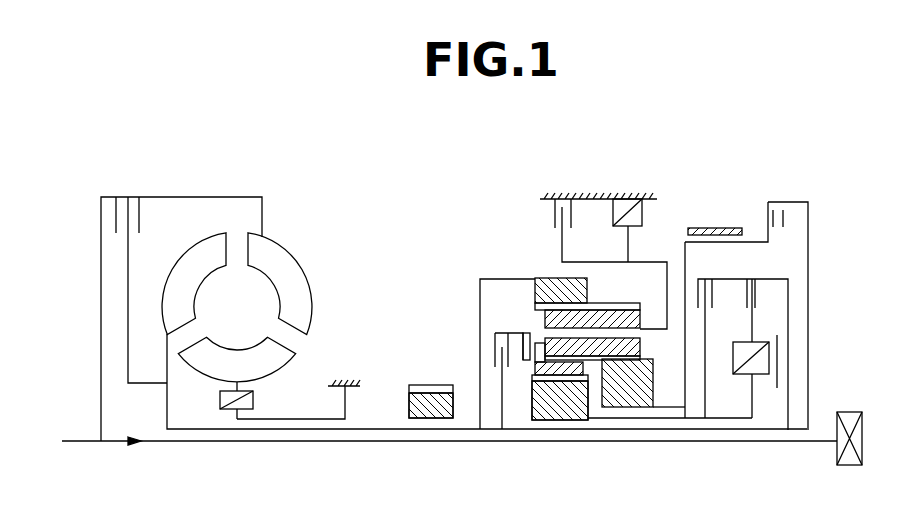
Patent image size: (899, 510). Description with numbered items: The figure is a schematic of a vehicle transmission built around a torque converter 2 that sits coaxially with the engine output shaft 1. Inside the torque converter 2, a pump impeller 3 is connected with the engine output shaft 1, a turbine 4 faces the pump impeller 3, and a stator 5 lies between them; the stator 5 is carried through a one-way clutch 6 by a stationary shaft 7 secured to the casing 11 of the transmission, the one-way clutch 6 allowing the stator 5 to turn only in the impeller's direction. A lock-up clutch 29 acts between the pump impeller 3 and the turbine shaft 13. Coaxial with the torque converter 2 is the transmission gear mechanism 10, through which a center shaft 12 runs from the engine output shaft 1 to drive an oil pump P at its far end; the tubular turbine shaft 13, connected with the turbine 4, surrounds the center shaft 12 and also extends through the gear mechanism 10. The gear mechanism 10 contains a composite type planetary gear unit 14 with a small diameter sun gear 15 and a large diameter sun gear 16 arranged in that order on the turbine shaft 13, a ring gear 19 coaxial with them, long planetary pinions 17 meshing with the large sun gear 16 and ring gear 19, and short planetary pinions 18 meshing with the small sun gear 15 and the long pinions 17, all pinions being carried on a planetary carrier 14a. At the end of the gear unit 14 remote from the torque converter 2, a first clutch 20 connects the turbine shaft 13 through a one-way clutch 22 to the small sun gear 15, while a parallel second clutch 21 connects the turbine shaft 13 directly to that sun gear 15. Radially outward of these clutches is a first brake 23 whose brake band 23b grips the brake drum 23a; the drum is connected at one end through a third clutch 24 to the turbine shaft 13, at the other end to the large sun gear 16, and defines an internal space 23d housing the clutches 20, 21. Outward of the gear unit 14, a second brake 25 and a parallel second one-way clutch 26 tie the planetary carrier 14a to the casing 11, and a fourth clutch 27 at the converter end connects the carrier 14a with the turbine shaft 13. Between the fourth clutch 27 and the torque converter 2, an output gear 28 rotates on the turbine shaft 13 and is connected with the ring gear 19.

The engine output shaft 1 is at (79, 444).
The torque converter 2 is at (317, 249).
The pump impeller 3 is at (281, 243).
The turbine 4 is at (190, 248).
The stator 5 is at (278, 366).
The one-way clutch 6 is at (253, 400).
The stationary shaft 7 is at (325, 421).
The transmission gear mechanism 10 is at (716, 141).
The casing 11 is at (352, 384).
The center shaft 12 is at (480, 430).
The turbine shaft 13 is at (611, 430).
The composite type planetary gear unit 14 is at (466, 263).
The planetary carrier 14a is at (528, 335).
The small diameter sun gear 15 is at (575, 421).
The large diameter sun gear 16 is at (645, 405).
The long planetary pinions 17 is at (640, 345).
The short planetary pinions 18 is at (537, 366).
The ring gear 19 is at (546, 279).
The first clutch 20 is at (763, 298).
The second clutch 21 is at (718, 293).
The one-way clutch 22 is at (770, 358).
The first brake 23 is at (776, 135).
The brake drum 23a is at (724, 231).
The brake band 23b is at (711, 227).
The internal space 23d is at (684, 262).
The third clutch 24 is at (779, 200).
The second brake 25 is at (566, 197).
The second one-way clutch 26 is at (643, 215).
The fourth clutch 27 is at (494, 350).
The output gear 28 is at (430, 419).
The lock-up clutch 29 is at (108, 215).
The oil pump P is at (838, 450).